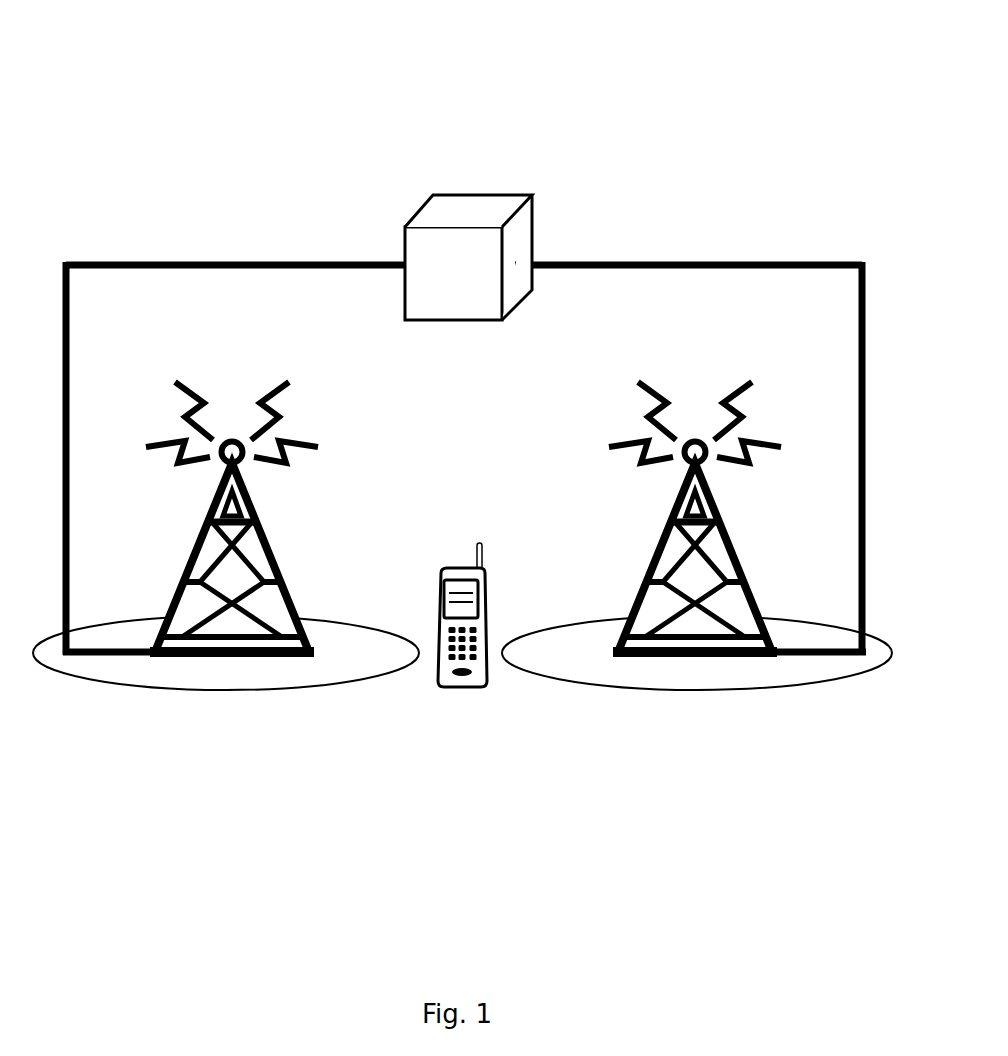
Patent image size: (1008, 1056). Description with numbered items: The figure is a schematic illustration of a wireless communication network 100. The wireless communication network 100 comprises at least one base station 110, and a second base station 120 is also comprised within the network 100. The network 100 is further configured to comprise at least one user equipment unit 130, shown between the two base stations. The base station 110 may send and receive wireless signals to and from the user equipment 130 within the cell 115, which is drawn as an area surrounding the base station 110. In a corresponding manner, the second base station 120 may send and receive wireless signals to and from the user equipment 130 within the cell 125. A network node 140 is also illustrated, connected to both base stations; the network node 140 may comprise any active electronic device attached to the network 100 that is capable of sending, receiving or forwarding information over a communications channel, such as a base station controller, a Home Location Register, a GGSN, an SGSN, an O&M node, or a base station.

The wireless communication network 100 is at (765, 86).
The base station 110 is at (202, 519).
The cell 115 is at (186, 678).
The second base station 120 is at (724, 519).
The cell 125 is at (738, 678).
The user equipment unit 130 is at (462, 655).
The network node 140 is at (472, 283).